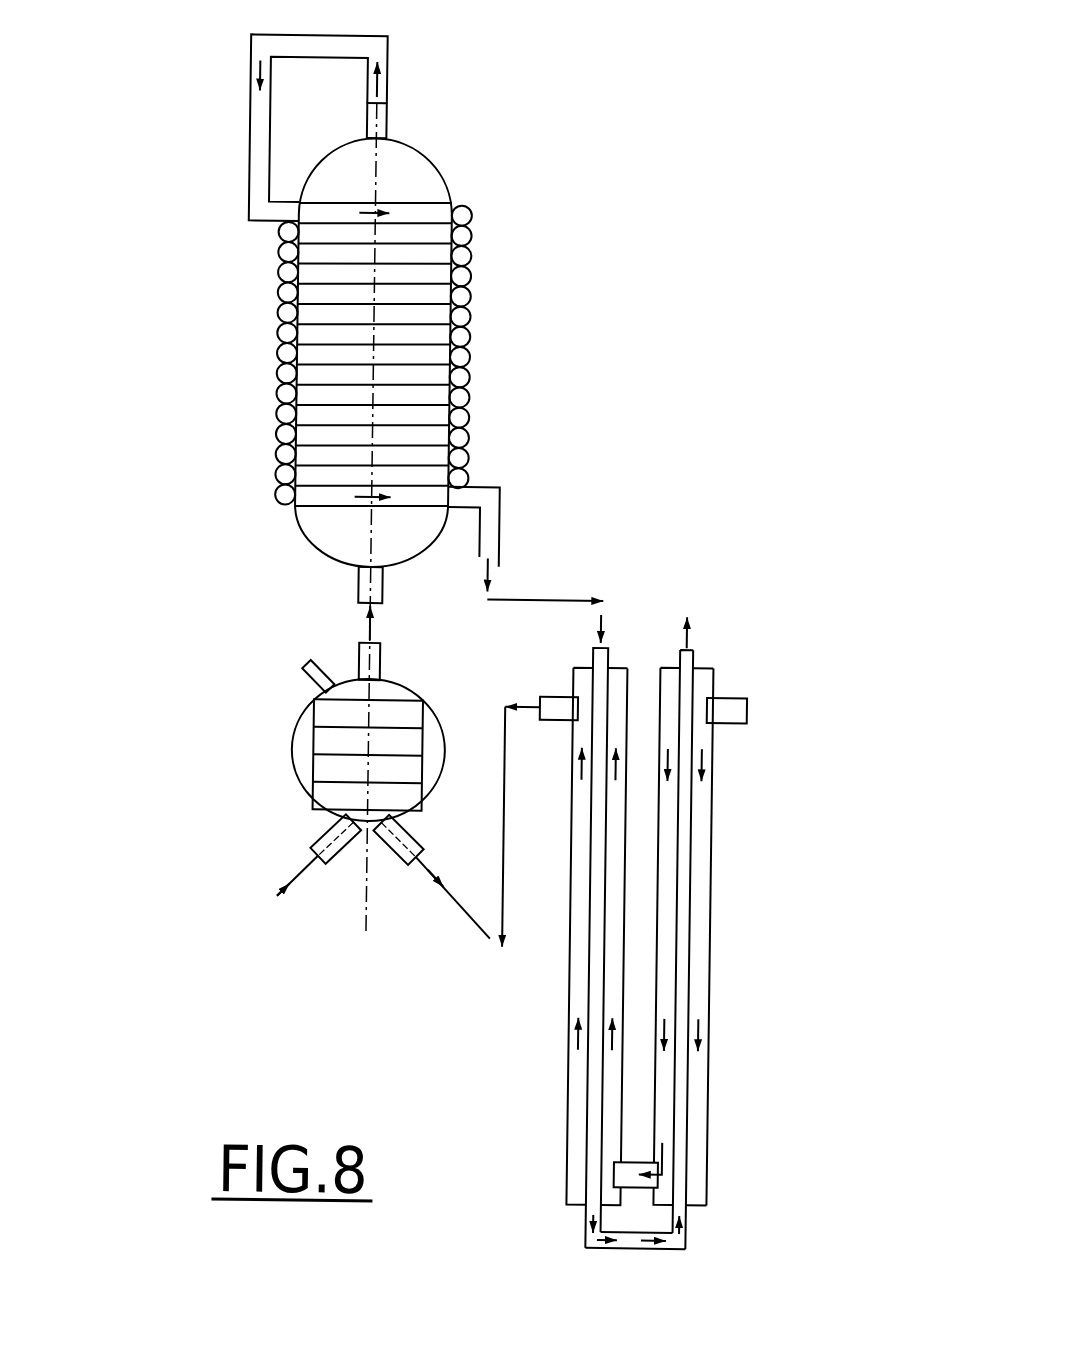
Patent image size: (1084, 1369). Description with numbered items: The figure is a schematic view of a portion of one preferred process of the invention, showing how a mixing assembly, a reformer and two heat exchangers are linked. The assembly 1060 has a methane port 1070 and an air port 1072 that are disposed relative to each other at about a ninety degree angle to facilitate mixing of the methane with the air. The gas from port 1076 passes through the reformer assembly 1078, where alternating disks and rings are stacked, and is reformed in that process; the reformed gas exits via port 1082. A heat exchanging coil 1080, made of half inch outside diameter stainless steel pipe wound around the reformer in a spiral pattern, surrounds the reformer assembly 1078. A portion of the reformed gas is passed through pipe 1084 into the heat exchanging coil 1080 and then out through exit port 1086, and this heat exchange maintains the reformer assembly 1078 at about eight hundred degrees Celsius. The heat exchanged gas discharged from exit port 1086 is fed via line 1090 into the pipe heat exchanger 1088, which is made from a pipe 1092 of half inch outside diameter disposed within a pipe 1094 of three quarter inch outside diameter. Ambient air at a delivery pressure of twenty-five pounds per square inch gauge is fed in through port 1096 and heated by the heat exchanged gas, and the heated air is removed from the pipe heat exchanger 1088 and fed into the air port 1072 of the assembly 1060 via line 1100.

The assembly 1060 is at (295, 743).
The methane port 1070 is at (315, 843).
The air port 1072 is at (414, 862).
The port 1076 is at (381, 655).
The reformer assembly 1078 is at (451, 184).
The heat exchanging coil 1080 is at (461, 351).
The port 1082 is at (380, 124).
The pipe 1084 is at (380, 84).
The exit port 1086 is at (490, 510).
The pipe heat exchanger 1088 is at (727, 835).
The line 1090 is at (606, 624).
The pipe 1092 is at (687, 1233).
The pipe 1094 is at (717, 1078).
The port 1096 is at (722, 703).
The line 1100 is at (505, 885).